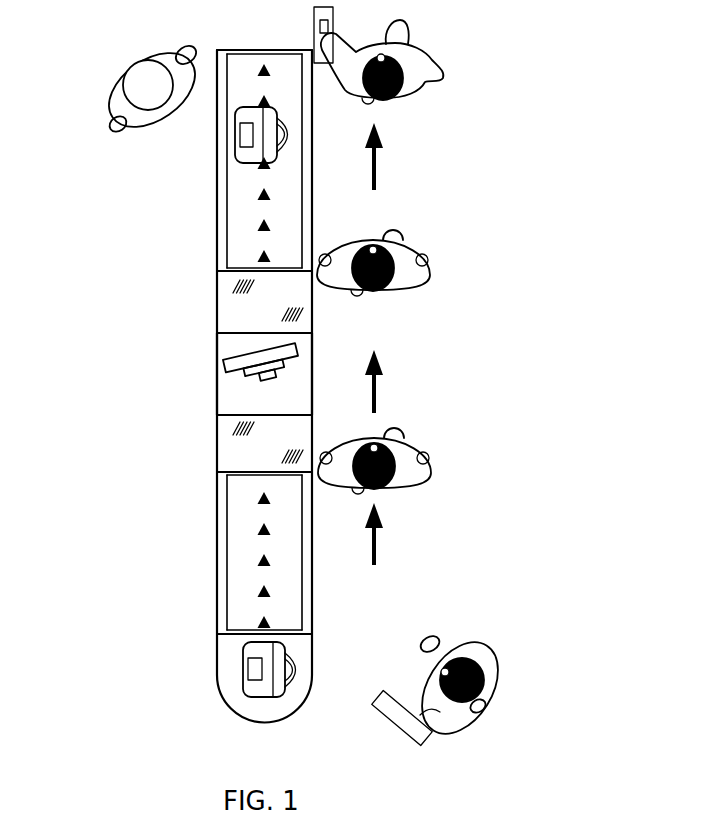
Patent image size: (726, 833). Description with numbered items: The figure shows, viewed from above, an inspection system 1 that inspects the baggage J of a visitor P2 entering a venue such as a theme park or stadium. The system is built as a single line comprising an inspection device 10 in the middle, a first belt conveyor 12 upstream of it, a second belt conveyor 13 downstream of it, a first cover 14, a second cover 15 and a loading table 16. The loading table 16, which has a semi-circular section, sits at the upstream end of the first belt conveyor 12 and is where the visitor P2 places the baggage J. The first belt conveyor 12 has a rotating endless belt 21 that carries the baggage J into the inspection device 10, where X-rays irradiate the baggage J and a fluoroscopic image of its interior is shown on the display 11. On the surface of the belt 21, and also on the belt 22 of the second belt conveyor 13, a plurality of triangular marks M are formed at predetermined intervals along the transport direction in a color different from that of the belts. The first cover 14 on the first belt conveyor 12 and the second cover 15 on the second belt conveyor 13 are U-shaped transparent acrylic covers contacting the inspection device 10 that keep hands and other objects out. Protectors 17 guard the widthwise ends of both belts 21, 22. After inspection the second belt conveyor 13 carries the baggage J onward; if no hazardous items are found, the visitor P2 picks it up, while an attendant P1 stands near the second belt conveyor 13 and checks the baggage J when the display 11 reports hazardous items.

The inspection system 1 is at (570, 107).
The inspection device 10 is at (215, 393).
The display 11 is at (230, 358).
The first belt conveyor 12 is at (164, 561).
The second belt conveyor 13 is at (150, 187).
The first cover 14 is at (228, 453).
The second cover 15 is at (227, 312).
The loading table 16 is at (225, 670).
The protectors 17 is at (220, 172).
The belt 21 is at (238, 507).
The belt 22 is at (235, 235).
The mark M is at (258, 223).
The baggage J is at (280, 688).
The attendant P1 is at (123, 110).
The visitor P2 is at (430, 78).